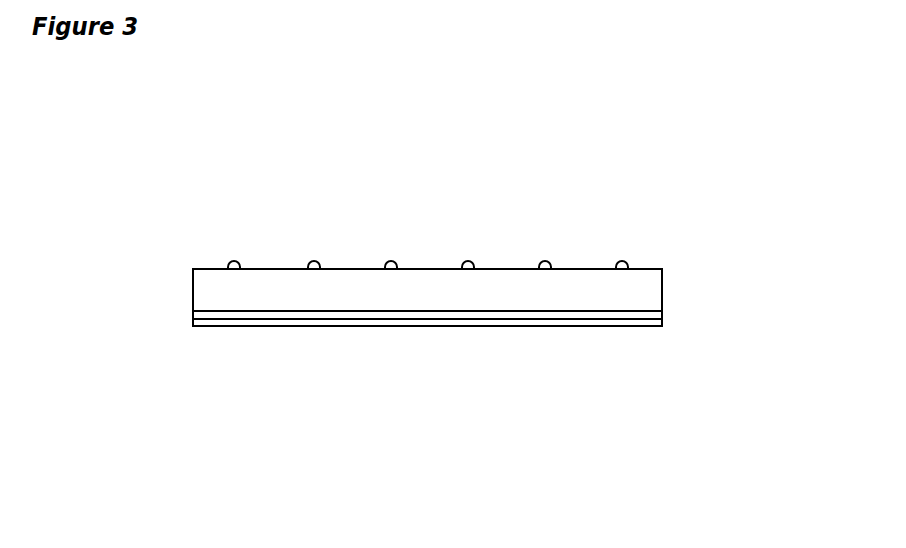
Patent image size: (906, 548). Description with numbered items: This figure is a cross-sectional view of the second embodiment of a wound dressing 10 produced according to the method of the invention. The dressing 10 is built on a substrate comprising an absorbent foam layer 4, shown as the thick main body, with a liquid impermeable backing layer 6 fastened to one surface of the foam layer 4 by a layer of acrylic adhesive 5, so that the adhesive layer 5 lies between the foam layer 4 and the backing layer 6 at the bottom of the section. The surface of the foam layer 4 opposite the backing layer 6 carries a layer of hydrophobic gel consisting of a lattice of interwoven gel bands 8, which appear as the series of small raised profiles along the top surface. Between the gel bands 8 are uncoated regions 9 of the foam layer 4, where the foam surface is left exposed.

The wound dressing 10 is at (548, 182).
The absorbent foam layer 4 is at (193, 293).
The layer of acrylic adhesive 5 is at (650, 314).
The liquid impermeable backing layer 6 is at (502, 320).
The uncoated regions 9 is at (272, 268).
The gel bands 8 is at (623, 263).